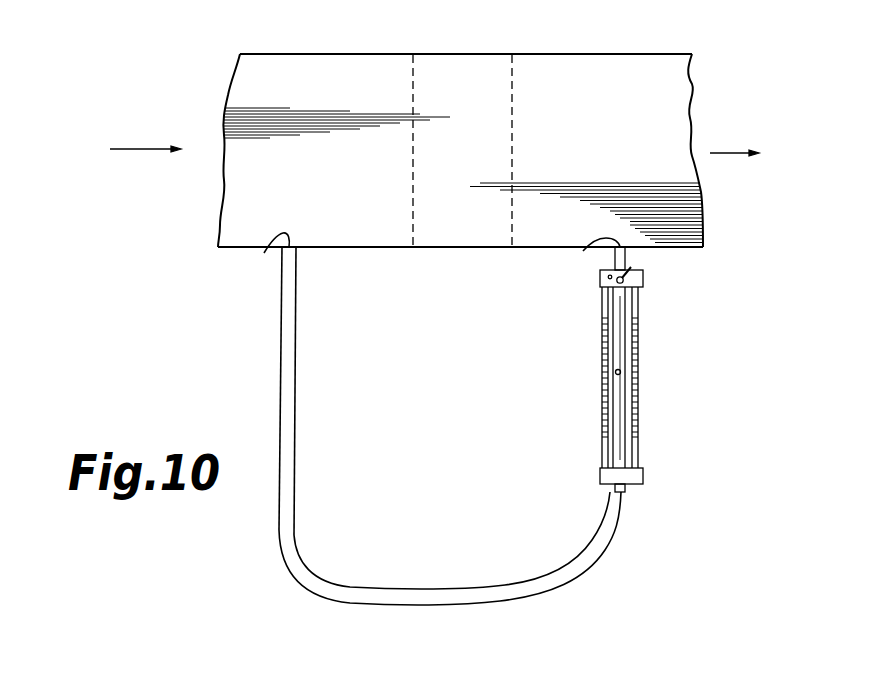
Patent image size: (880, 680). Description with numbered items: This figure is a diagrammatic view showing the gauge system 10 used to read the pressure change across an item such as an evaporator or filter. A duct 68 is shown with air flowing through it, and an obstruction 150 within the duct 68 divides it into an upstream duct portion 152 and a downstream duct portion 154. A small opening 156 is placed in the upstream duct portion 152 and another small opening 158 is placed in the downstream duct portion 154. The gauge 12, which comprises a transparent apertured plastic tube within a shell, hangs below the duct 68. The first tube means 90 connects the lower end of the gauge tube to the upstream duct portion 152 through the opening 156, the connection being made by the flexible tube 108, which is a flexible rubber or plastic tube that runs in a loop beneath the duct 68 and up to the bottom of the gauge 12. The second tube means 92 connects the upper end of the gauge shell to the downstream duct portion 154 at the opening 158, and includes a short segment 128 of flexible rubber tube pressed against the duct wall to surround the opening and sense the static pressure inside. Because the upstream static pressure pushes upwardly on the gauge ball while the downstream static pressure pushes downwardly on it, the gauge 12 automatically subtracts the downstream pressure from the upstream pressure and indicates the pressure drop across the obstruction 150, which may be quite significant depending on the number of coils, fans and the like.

The gauge system 10 is at (704, 489).
The gauge 12 is at (644, 376).
The duct 68 is at (622, 54).
The first tube means 90 is at (555, 608).
The second tube means 92 is at (651, 258).
The flexible tube 108 is at (320, 572).
The short segment of flexible rubber tube 128 is at (614, 258).
The obstruction 150 is at (494, 95).
The upstream duct portion 152 is at (282, 66).
The downstream duct portion 154 is at (664, 109).
The small opening 156 is at (266, 253).
The small opening 158 is at (583, 251).